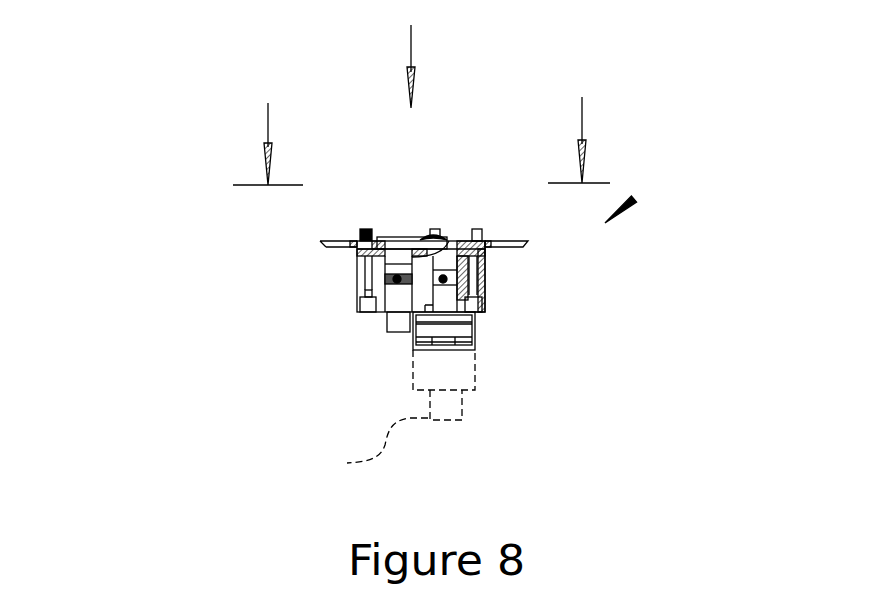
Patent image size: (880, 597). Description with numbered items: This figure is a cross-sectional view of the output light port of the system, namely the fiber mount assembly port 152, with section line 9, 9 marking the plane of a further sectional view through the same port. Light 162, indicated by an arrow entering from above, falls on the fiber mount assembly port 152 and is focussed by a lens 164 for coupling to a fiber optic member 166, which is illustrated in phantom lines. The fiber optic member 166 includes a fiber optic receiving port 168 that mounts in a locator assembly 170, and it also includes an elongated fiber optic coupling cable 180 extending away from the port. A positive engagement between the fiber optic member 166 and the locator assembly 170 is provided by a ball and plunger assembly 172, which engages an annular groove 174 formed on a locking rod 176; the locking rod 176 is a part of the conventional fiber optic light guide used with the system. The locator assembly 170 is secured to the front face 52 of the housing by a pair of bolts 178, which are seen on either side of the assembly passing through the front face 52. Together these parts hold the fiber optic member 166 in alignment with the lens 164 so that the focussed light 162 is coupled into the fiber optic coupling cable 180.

The section line 9- 9 is at (424, 141).
The front face 52 is at (515, 240).
The fiber mount assembly port 152 is at (634, 199).
The light 162 is at (417, 43).
The lens 164 is at (452, 237).
The fiber optic member 166 is at (476, 392).
The fiber optic receiving port 168 is at (476, 355).
The locator assembly 170 is at (483, 280).
The ball and plunger assembly 172 is at (397, 281).
The annular groove 174 is at (394, 278).
The locking rod 176 is at (403, 334).
The bolts 178 is at (358, 240).
The fiber optic coupling cable 180 is at (355, 457).